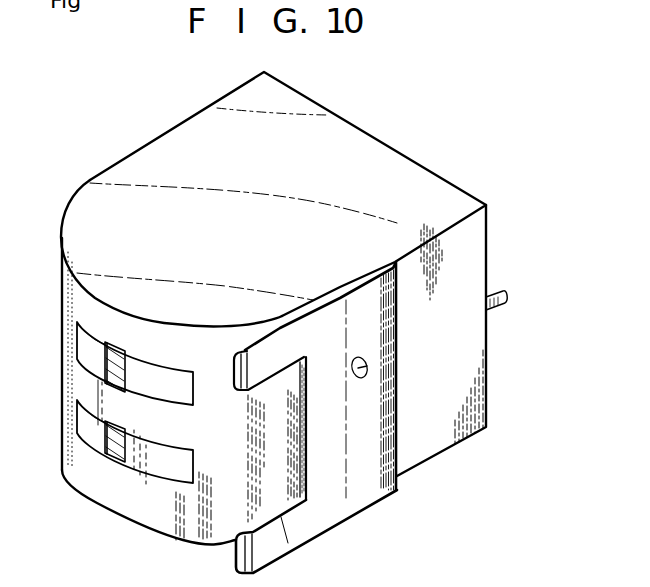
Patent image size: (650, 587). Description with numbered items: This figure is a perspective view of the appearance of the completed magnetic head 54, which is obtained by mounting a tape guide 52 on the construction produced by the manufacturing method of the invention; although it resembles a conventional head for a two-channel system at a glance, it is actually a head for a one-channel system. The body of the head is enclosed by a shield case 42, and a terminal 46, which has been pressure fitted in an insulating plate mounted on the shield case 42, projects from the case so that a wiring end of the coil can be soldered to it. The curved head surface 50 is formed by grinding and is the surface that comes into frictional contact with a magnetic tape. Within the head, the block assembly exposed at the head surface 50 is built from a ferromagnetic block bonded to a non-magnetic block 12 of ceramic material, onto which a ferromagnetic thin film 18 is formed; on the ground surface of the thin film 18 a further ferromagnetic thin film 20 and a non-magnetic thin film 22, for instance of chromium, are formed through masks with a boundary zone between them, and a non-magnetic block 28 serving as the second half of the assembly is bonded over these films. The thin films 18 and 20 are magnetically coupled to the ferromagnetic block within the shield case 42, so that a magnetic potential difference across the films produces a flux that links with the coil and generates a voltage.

The non-magnetic block 12 is at (161, 379).
The ferromagnetic thin film 18 is at (102, 417).
The ferromagnetic thin film 20 is at (108, 452).
The non-magnetic thin film 22 is at (103, 349).
The non-magnetic block 28 is at (88, 342).
The shield case 42 is at (273, 313).
The terminal 46 is at (500, 293).
The head surface 50 is at (107, 504).
The tape guide 52 is at (336, 508).
The magnetic head 54 is at (412, 123).